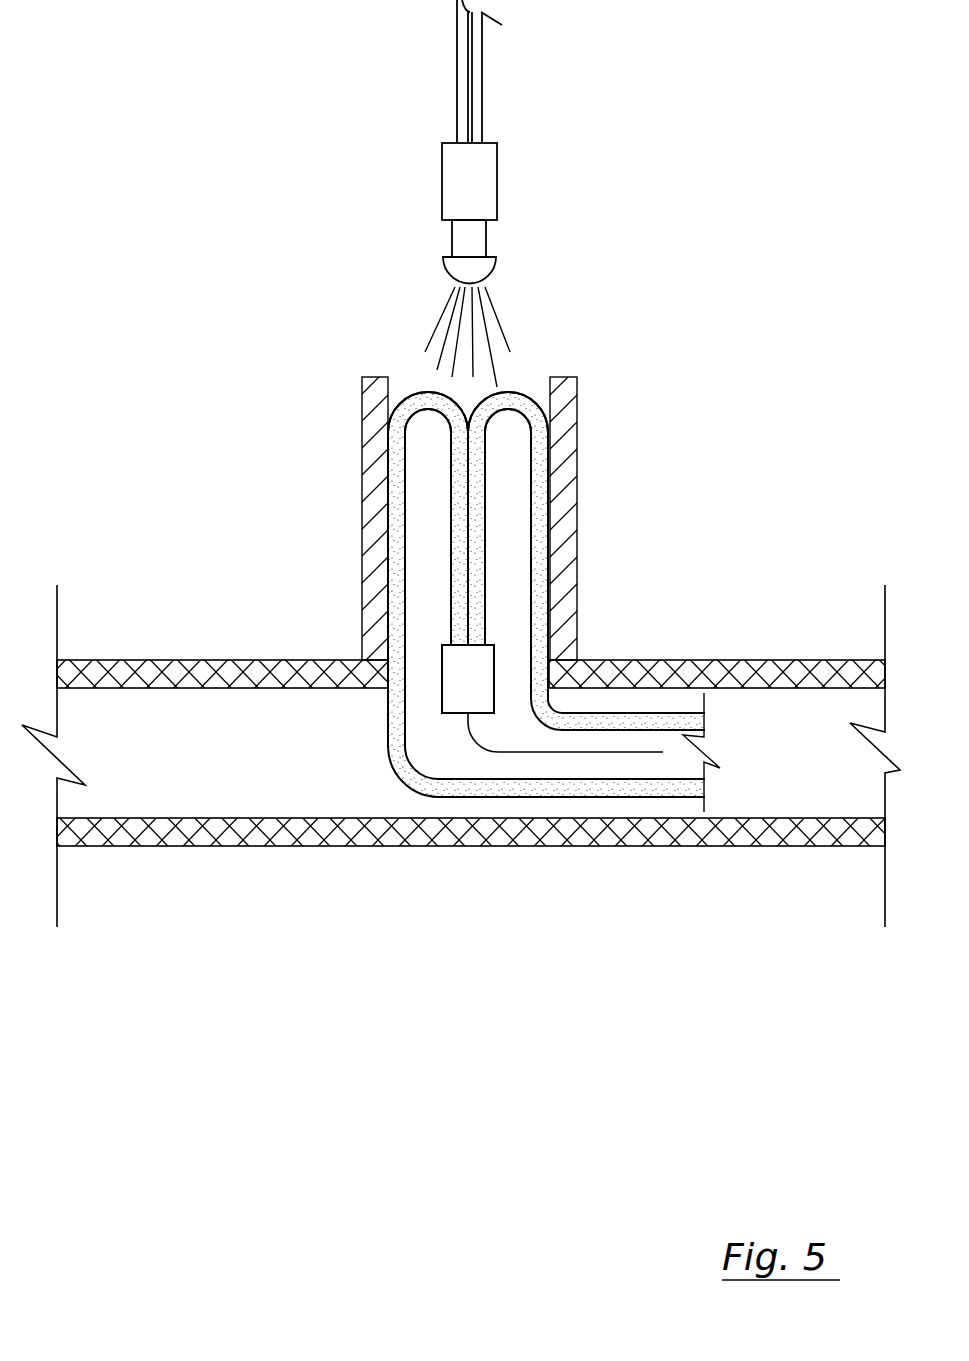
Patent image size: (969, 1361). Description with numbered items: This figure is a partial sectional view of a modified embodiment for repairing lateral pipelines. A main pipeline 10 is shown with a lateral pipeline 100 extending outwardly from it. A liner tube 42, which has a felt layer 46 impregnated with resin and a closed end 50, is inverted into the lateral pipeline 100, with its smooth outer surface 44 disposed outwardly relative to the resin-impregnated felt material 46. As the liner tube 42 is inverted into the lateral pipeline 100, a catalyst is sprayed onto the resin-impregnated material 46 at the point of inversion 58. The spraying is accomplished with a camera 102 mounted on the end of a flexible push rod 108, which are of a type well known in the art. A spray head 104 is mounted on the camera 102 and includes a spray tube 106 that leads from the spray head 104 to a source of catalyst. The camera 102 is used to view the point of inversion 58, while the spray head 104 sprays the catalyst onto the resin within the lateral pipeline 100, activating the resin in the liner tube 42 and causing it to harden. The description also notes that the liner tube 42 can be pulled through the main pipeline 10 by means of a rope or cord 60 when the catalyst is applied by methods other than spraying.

The main pipeline 10 is at (252, 655).
The liner tube 42 is at (388, 775).
The smooth outer surface 44 is at (432, 410).
The felt layer 46 is at (420, 390).
The closed end 50 is at (477, 663).
The point of inversion 58 is at (447, 340).
The rope or cord 60 is at (663, 752).
The lateral pipeline 100 is at (356, 551).
The camera 102 is at (436, 178).
The spray head 104 is at (443, 263).
The spray tube 106 is at (483, 72).
The flexible push rod 108 is at (457, 72).